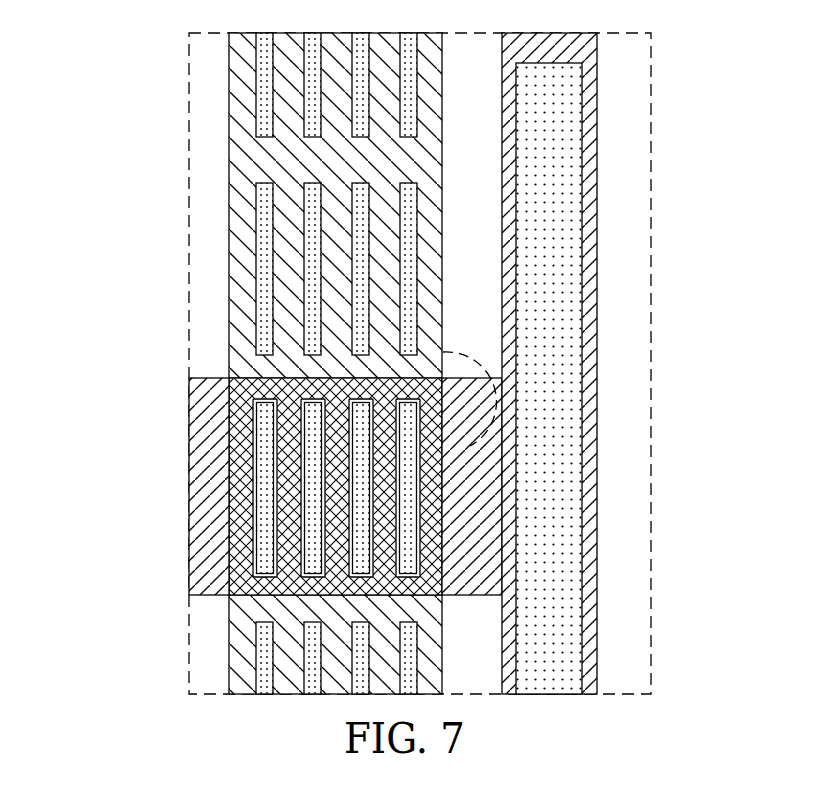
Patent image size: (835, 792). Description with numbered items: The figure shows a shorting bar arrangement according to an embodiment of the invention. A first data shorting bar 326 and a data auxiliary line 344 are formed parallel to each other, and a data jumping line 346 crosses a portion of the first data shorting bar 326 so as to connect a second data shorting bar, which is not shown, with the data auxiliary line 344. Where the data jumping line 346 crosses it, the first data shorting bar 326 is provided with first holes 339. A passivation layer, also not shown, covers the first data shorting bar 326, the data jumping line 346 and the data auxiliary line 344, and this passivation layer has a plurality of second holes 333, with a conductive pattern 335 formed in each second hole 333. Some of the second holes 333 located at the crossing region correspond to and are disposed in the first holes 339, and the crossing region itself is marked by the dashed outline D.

The first data shorting bar 326 is at (442, 162).
The second holes 333 is at (258, 243).
The conductive pattern 335 is at (256, 313).
The first holes 339 is at (252, 445).
The data auxiliary line 344 is at (597, 375).
The data jumping line 346 is at (210, 597).
The distance D is at (460, 352).